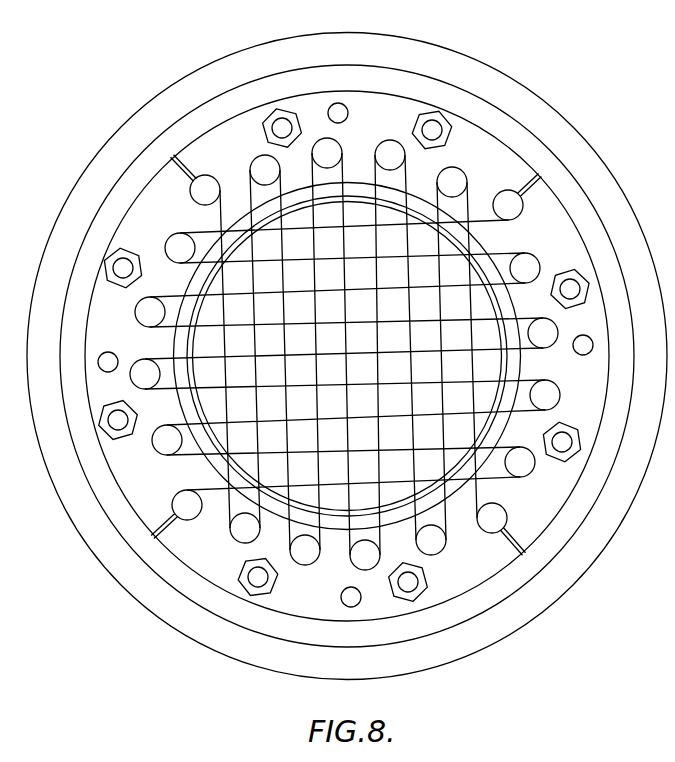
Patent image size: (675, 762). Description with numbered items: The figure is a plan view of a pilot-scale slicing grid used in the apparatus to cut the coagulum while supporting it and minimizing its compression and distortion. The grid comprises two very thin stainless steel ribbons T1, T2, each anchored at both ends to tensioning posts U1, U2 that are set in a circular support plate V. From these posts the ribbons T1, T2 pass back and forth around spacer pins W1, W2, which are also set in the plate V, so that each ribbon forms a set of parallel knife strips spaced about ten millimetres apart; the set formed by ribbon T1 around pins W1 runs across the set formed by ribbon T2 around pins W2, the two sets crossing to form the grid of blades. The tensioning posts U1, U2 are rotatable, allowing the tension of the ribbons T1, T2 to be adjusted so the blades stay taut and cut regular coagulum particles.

The support plate V is at (378, 110).
The spacer pin W1 is at (525, 270).
The spacer pin W2 is at (259, 158).
The tensioning post U1 is at (516, 212).
The tensioning post U2 is at (198, 197).
The stainless steel ribbon T1 is at (493, 255).
The stainless steel ribbon T2 is at (250, 190).